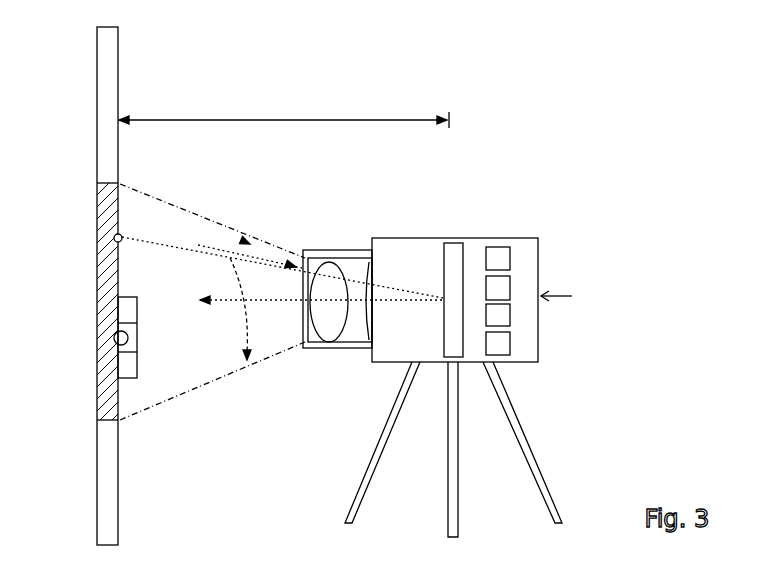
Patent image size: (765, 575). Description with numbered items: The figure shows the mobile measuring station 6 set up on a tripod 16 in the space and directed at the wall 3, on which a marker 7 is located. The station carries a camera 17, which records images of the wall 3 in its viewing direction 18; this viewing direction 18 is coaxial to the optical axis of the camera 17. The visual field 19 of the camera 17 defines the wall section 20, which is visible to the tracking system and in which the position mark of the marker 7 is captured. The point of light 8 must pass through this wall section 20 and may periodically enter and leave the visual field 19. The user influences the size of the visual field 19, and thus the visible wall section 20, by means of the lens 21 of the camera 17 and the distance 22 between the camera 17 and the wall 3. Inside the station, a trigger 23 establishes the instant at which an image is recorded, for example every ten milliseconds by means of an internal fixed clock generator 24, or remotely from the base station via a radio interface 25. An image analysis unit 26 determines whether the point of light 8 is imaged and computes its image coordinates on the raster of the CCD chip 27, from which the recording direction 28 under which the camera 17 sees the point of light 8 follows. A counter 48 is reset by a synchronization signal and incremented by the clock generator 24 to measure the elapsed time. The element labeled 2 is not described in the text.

The sensor 2 is at (100, 323).
The wall 3 is at (104, 144).
The mobile measuring station 6 is at (547, 87).
The marker 7 is at (97, 297).
The point of light 8 is at (98, 233).
The tripod 16 is at (535, 460).
The camera 17 is at (473, 248).
The viewing direction 18 is at (217, 300).
The visual field 19 is at (237, 267).
The wall section 20 is at (98, 357).
The lens 21 is at (348, 268).
The distance 22 is at (340, 120).
The trigger 23 is at (502, 262).
The clock generator 24 is at (502, 317).
The radio interface 25 is at (560, 294).
The image analysis unit 26 is at (500, 290).
The CCD chip 27 is at (455, 257).
The recording direction 28 is at (275, 258).
The counter 48 is at (502, 345).